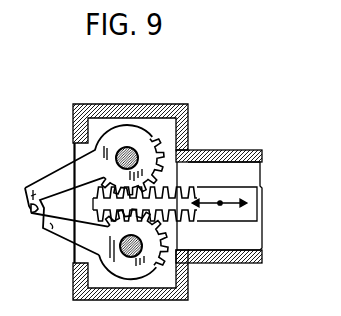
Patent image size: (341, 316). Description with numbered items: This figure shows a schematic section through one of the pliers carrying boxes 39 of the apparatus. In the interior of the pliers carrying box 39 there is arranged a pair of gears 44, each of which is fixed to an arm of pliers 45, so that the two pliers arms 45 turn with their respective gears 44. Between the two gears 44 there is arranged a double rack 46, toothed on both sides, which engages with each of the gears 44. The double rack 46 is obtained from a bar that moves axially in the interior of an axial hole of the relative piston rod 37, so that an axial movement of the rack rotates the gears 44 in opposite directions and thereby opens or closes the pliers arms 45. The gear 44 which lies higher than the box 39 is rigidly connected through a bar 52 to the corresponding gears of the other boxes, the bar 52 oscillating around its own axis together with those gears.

The piston rod 37 is at (245, 150).
The pliers carrying box 39 is at (153, 103).
The gears 44 is at (192, 150).
The arm of pliers 45 is at (62, 180).
The double rack 46 is at (100, 208).
The bar 52 is at (140, 149).